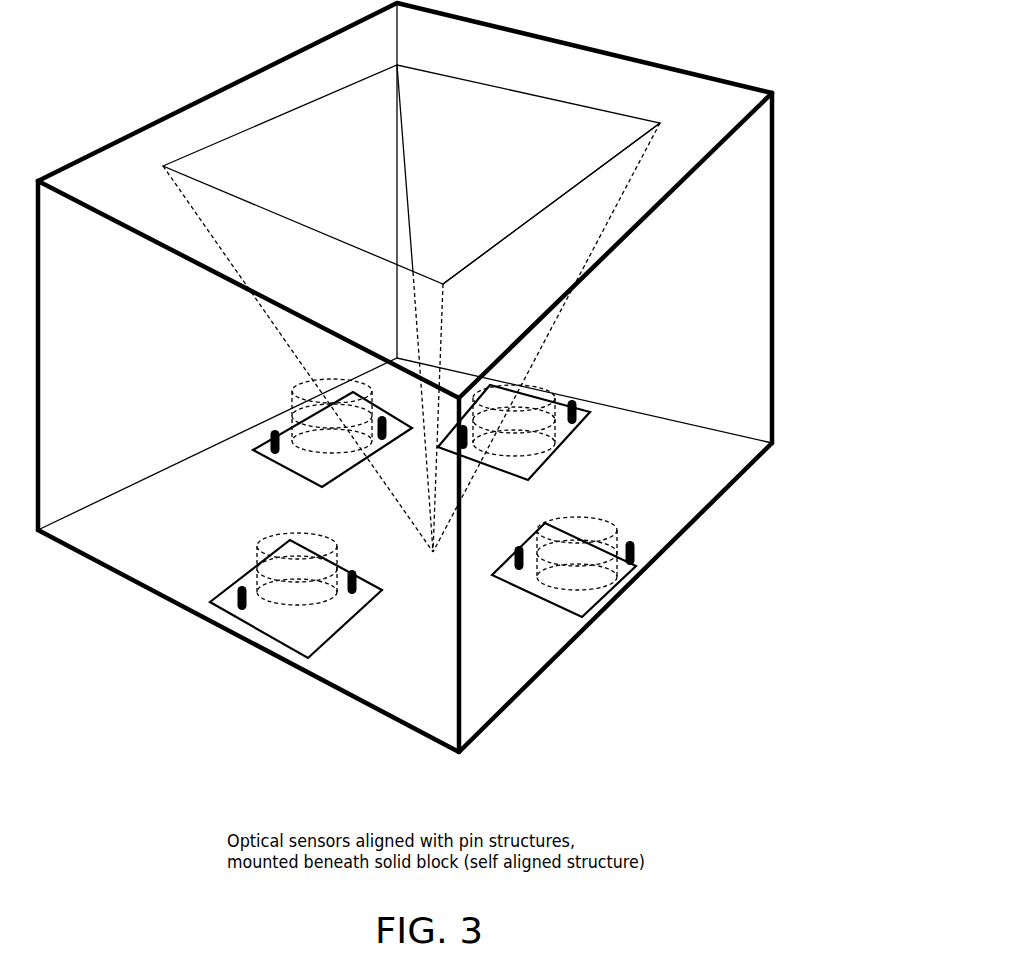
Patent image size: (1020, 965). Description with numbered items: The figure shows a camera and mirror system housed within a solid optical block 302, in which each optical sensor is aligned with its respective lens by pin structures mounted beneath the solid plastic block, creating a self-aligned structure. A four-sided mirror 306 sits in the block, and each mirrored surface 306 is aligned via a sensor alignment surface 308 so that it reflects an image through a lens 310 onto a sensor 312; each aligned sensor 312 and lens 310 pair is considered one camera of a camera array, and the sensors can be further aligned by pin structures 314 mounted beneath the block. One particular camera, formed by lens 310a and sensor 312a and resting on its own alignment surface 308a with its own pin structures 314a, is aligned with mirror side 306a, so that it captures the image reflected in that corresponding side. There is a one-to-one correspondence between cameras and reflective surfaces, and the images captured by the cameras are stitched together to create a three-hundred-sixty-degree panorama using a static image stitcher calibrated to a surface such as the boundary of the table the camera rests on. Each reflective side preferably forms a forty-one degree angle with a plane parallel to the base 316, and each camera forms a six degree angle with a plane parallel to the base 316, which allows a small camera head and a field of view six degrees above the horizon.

The solid alignment block 302 is at (678, 634).
The mirrored surface 306 is at (232, 212).
The mirror side 306a is at (595, 193).
The sensor alignment surface 308 is at (222, 652).
The sensor mounting substrate 308a is at (664, 606).
The lens 310 is at (292, 587).
The lens 310a is at (606, 566).
The sensor 312 is at (505, 480).
The sensor 312a is at (582, 617).
The pin structures 314 is at (235, 603).
The pin structure 314a is at (632, 545).
The base 316 is at (127, 538).